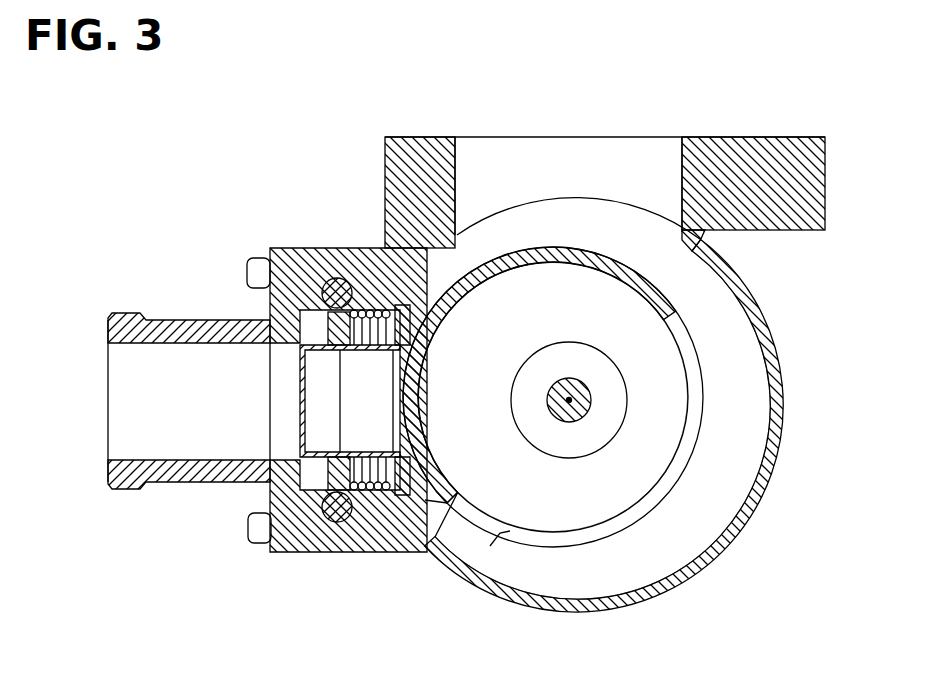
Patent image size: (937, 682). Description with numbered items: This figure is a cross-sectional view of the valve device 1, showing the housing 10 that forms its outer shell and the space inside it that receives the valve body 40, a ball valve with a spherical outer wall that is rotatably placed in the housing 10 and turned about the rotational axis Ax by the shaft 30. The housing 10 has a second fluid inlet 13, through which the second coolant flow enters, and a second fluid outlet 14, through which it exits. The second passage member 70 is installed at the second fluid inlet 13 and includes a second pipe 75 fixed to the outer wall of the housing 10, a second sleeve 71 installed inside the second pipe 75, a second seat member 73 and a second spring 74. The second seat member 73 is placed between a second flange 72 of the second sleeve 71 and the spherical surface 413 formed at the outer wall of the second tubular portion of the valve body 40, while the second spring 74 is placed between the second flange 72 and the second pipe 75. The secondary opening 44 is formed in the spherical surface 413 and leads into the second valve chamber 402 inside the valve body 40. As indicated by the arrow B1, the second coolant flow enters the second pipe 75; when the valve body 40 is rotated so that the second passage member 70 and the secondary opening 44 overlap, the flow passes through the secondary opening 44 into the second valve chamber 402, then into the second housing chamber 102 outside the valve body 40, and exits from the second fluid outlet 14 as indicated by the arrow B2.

The valve device 1 is at (304, 70).
The housing 10 is at (728, 265).
The second fluid inlet 13 is at (367, 300).
The second fluid outlet 14 is at (600, 163).
The shaft 30 is at (570, 422).
The valve body 40 is at (488, 548).
The secondary opening 44 is at (705, 388).
The second passage member 70 is at (162, 318).
The second sleeve 71 is at (273, 347).
The second flange 72 is at (273, 278).
The second seat member 73 is at (385, 490).
The second spring 74 is at (345, 512).
The second pipe 75 is at (185, 487).
The second housing chamber 102 is at (727, 421).
The second valve chamber 402 is at (633, 322).
The spherical surface 413 is at (440, 540).
The rotational axis Ax is at (568, 403).
The arrow B1 is at (78, 405).
The arrow B2 is at (572, 28).